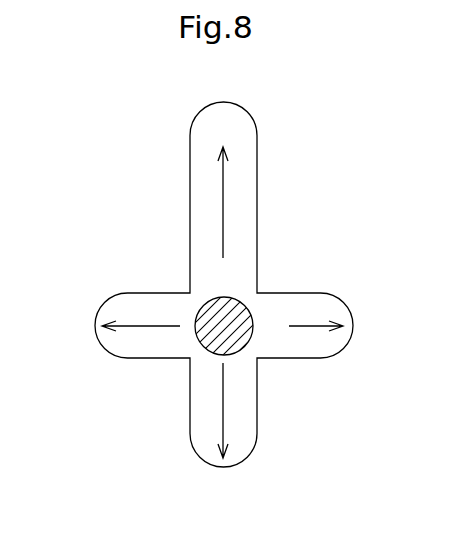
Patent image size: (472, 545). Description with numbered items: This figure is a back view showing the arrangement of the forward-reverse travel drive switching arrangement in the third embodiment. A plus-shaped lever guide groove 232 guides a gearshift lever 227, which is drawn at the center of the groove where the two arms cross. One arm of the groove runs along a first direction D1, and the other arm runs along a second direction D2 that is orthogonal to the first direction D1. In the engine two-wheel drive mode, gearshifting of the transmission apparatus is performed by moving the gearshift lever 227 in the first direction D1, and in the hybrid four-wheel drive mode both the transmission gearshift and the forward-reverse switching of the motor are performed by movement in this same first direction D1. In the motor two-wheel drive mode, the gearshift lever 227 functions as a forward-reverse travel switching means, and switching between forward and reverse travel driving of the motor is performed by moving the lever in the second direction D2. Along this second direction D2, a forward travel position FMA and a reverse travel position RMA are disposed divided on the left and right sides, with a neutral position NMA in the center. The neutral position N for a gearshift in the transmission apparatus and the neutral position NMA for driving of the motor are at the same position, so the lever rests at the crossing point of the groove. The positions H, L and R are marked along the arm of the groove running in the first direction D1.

The lever guide groove 232 is at (146, 300).
The gearshift lever 227 is at (213, 356).
The first direction D1 is at (224, 194).
The second direction D2 is at (127, 330).
The forward travel position FMA is at (54, 326).
The reverse travel position RMA is at (385, 326).
The neutral position NMA is at (225, 276).
The neutral position N is at (272, 325).
The high position H is at (278, 130).
The low position L is at (277, 208).
The reverse position R is at (277, 448).